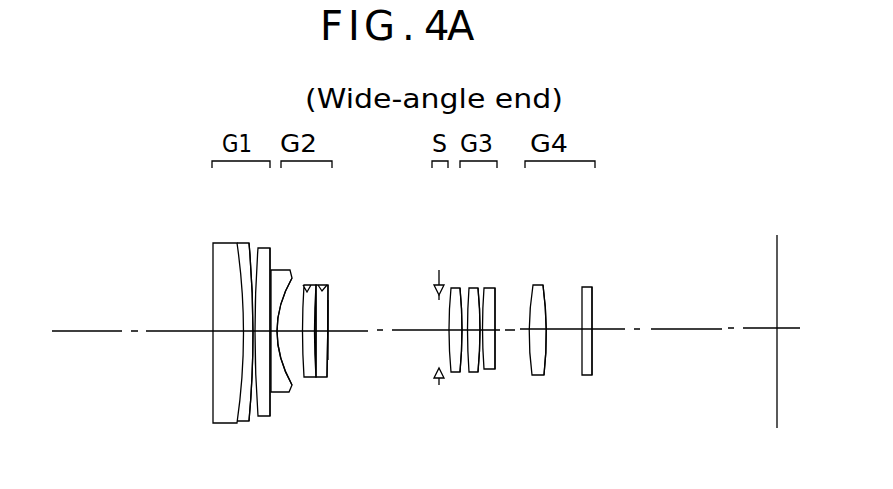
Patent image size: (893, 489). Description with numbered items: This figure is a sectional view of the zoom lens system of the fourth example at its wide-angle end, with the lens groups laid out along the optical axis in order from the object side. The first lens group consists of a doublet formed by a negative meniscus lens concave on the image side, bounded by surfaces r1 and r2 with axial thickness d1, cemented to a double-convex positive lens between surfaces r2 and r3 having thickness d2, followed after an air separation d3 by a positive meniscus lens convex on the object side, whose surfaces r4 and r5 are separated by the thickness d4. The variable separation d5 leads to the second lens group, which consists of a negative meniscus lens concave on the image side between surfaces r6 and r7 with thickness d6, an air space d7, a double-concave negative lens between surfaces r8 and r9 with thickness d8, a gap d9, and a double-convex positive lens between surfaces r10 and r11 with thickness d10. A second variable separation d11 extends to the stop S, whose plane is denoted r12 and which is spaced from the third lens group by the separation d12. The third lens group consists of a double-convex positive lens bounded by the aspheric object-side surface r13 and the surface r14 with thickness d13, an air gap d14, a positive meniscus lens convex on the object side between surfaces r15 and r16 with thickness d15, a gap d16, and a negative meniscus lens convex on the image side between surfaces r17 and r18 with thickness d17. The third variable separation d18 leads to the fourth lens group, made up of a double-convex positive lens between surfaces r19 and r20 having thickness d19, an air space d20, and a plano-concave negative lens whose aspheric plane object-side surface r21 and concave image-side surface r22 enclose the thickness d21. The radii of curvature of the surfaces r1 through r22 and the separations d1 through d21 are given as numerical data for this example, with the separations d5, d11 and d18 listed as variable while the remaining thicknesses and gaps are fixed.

The first lens surface radius of curvature r1 is at (213, 255).
The second lens surface radius of curvature r2 is at (238, 250).
The third lens surface radius of curvature r3 is at (250, 258).
The fourth lens surface radius of curvature r4 is at (258, 250).
The fifth lens surface radius of curvature r5 is at (273, 272).
The sixth lens surface radius of curvature r6 is at (280, 300).
The seventh lens surface radius of curvature r7 is at (304, 287).
The eighth lens surface radius of curvature r8 is at (314, 290).
The ninth lens surface radius of curvature r9 is at (326, 287).
The tenth lens surface radius of curvature r10 is at (330, 293).
The eleventh lens surface radius of curvature r11 is at (330, 298).
The stop surface r12 is at (437, 307).
The thirteenth lens surface radius of curvature r13 is at (451, 287).
The fourteenth lens surface radius of curvature r14 is at (461, 287).
The fifteenth lens surface radius of curvature r15 is at (469, 287).
The sixteenth lens surface radius of curvature r16 is at (479, 288).
The seventeenth lens surface radius of curvature r17 is at (486, 287).
The eighteenth lens surface radius of curvature r18 is at (497, 287).
The nineteenth lens surface radius of curvature r19 is at (531, 287).
The twentieth lens surface radius of curvature r20 is at (546, 285).
The twenty-first lens surface radius of curvature r21 is at (582, 290).
The twenty-second lens surface radius of curvature r22 is at (594, 288).
The first lens surface separation d1 is at (228, 340).
The second lens surface separation d2 is at (243, 345).
The third lens surface separation d3 is at (252, 355).
The fourth lens surface separation d4 is at (263, 355).
The fifth lens surface separation d5 is at (271, 360).
The sixth lens surface separation d6 is at (283, 365).
The seventh lens surface separation d7 is at (294, 345).
The eighth lens surface separation d8 is at (309, 355).
The ninth lens surface separation d9 is at (322, 355).
The tenth lens surface separation d10 is at (328, 350).
The eleventh lens surface separation d11 is at (383, 349).
The twelfth lens surface separation d12 is at (447, 355).
The thirteenth lens surface separation d13 is at (457, 345).
The fourteenth lens surface separation d14 is at (465, 345).
The fifteenth lens surface separation d15 is at (474, 350).
The sixteenth lens surface separation d16 is at (487, 350).
The seventeenth lens surface separation d17 is at (492, 348).
The eighteenth lens surface separation d18 is at (500, 342).
The nineteenth lens surface separation d19 is at (537, 348).
The twentieth lens surface separation d20 is at (564, 349).
The twenty-first lens surface separation d21 is at (588, 340).